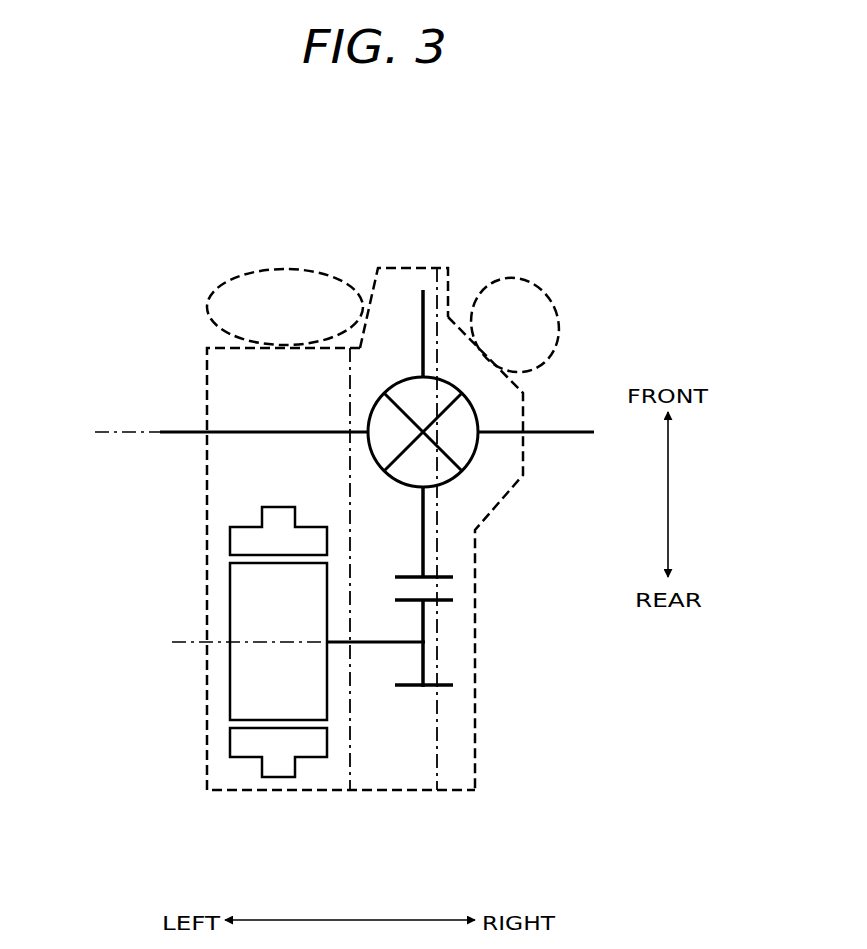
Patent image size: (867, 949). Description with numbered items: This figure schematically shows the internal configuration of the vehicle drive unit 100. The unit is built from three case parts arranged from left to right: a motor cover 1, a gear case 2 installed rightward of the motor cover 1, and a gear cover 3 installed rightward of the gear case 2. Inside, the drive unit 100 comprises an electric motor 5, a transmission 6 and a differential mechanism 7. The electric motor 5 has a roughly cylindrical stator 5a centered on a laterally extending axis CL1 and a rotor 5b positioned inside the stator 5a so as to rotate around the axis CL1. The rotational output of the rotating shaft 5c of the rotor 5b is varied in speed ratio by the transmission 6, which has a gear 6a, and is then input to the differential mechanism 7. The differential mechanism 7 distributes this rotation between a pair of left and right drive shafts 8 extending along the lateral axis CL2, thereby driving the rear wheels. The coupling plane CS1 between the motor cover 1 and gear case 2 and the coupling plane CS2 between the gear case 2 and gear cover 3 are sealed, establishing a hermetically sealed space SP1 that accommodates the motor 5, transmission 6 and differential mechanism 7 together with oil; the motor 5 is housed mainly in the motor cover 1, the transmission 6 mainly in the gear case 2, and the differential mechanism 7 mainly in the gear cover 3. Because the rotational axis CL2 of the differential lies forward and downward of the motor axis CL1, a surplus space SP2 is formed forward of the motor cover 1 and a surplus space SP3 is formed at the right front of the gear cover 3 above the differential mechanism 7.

The vehicle drive unit 100 is at (386, 483).
The motor cover 1 is at (206, 378).
The gear case 2 is at (397, 266).
The gear cover 3 is at (524, 412).
The electric motor 5 is at (276, 664).
The stator 5a is at (244, 527).
The rotor 5b is at (230, 596).
The rotating shaft 5c is at (378, 645).
The transmission 6 is at (446, 523).
The gear 6a is at (402, 690).
The differential mechanism 7 is at (472, 465).
The drive shafts 8 is at (181, 436).
The hermetically sealed space SP1 is at (453, 546).
The surplus space SP2 is at (217, 292).
The surplus space SP3 is at (546, 302).
The coupling plane CS1 is at (349, 748).
The coupling plane CS2 is at (438, 748).
The axis CL1 is at (225, 643).
The lateral axis CL2 is at (98, 433).